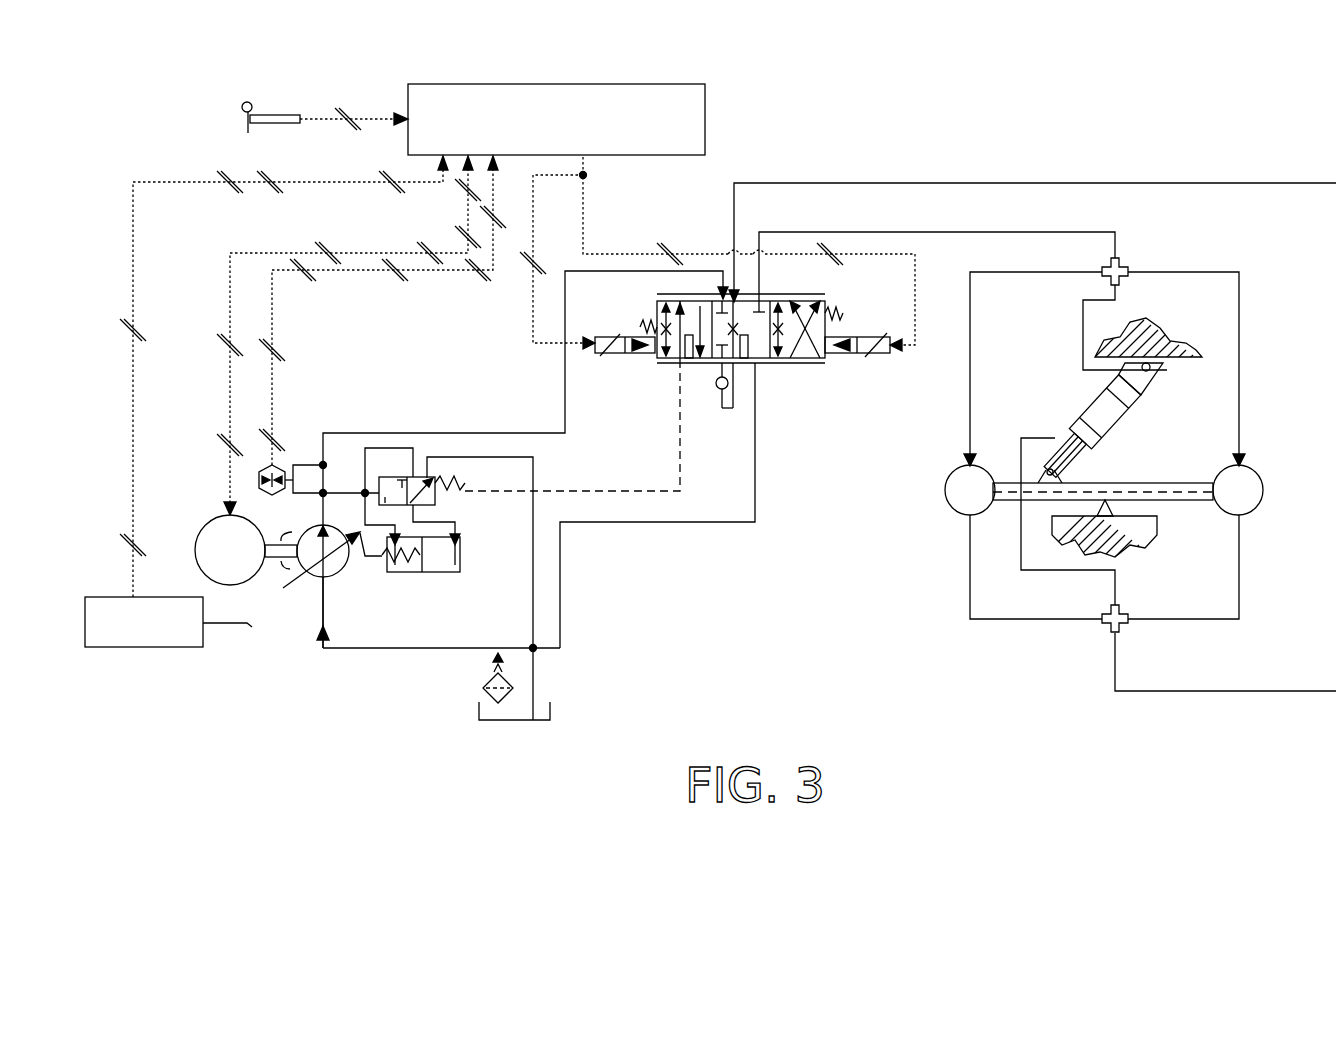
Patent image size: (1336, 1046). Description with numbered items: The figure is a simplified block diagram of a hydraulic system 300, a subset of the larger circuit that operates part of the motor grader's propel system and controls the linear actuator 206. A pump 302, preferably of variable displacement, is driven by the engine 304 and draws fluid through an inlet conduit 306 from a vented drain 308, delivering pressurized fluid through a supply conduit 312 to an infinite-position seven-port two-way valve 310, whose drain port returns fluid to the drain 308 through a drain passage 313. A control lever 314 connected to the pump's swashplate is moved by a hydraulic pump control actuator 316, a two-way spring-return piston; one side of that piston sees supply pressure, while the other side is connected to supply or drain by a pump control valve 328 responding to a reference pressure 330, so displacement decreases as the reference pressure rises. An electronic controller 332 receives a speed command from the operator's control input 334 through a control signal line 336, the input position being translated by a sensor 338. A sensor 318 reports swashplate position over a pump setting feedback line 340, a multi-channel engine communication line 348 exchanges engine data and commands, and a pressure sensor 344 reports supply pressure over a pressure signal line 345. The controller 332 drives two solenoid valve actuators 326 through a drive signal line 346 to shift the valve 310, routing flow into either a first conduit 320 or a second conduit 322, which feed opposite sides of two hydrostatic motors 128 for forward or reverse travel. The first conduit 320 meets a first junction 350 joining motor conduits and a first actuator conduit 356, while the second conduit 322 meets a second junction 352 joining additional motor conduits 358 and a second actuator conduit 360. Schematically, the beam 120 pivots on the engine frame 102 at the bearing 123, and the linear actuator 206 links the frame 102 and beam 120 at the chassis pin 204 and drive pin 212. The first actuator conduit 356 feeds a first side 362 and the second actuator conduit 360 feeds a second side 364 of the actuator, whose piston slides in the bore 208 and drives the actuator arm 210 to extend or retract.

The hydraulic system 300 is at (190, 112).
The pump 302 is at (335, 560).
The engine 304 is at (212, 528).
The inlet conduit 306 is at (420, 650).
The drain 308 is at (542, 700).
The 7-2 valve 310 is at (824, 396).
The supply conduit 312 is at (365, 433).
The drain passage 313 is at (533, 546).
The control lever 314 is at (247, 623).
The hydraulic pump control actuator 316 is at (420, 572).
The sensor 318 is at (152, 648).
The first conduit 320 is at (845, 183).
The second conduit 322 is at (905, 232).
The valve actuator 326 is at (635, 336).
The pump control valve 328 is at (438, 502).
The reference pressure 330 is at (568, 491).
The electronic controller 332 is at (640, 84).
The control input 334 is at (250, 103).
The control signal line 336 is at (370, 119).
The sensor 338 is at (272, 115).
The pump setting feedback line 340 is at (160, 182).
The pressure sensor 344 is at (253, 490).
The pressure signal line 345 is at (415, 272).
The drive signal line 346 is at (583, 254).
The multi-channel engine communication line 348 is at (230, 308).
The first junction 350 is at (1122, 633).
The second junction 352 is at (1128, 265).
The first actuator conduit 356 is at (1080, 575).
The additional motor conduits 358 is at (985, 272).
The second actuator conduit 360 is at (1082, 337).
The first side 362 is at (1152, 398).
The second side 364 is at (1108, 449).
The engine frame 102 is at (1153, 330).
The beam 120 is at (1200, 467).
The bearing 123 is at (1113, 512).
The hydrostatic motors 128 is at (955, 508).
The chassis pin 204 is at (1150, 368).
The linear actuator 206 is at (1013, 376).
The bore 208 is at (1120, 422).
The actuator arm 210 is at (1095, 410).
The drive pin 212 is at (1047, 467).